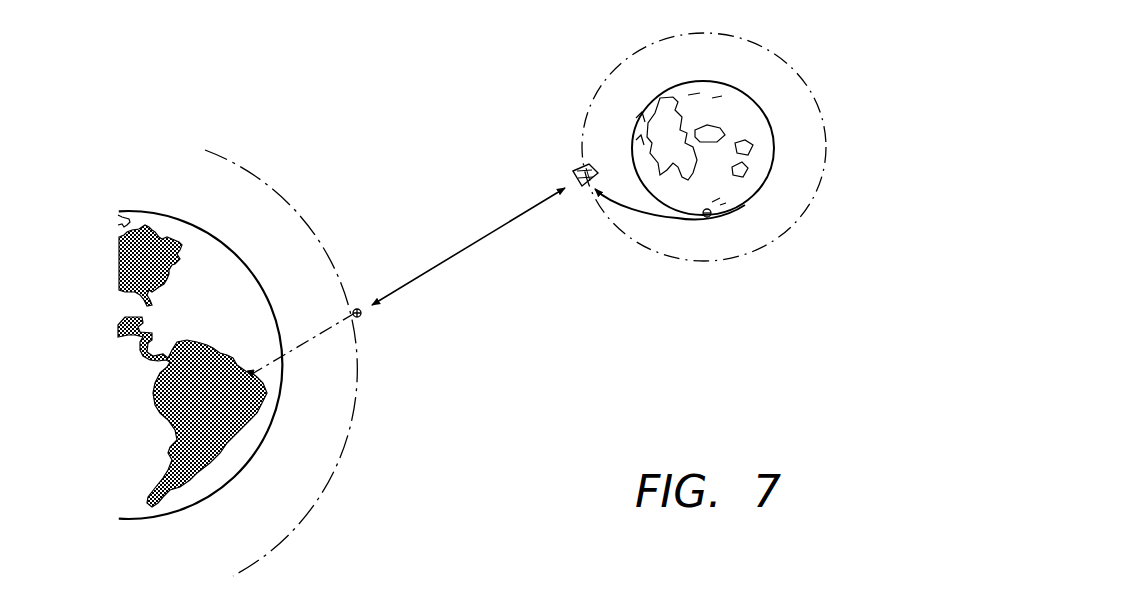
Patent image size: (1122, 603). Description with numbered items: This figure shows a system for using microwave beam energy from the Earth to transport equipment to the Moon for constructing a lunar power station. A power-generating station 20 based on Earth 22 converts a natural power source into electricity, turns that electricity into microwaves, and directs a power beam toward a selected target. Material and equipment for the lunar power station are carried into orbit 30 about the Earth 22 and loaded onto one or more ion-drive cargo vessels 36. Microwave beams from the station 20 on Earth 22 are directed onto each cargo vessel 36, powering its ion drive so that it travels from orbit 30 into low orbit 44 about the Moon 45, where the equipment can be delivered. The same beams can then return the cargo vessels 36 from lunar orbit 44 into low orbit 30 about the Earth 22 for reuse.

The power-generating station 20 is at (255, 376).
The Earth 22 is at (260, 290).
The Earth orbit 30 is at (345, 462).
The ion-drive cargo vessel 36 is at (572, 171).
The low lunar orbit 44 is at (827, 178).
The Moon 45 is at (773, 130).